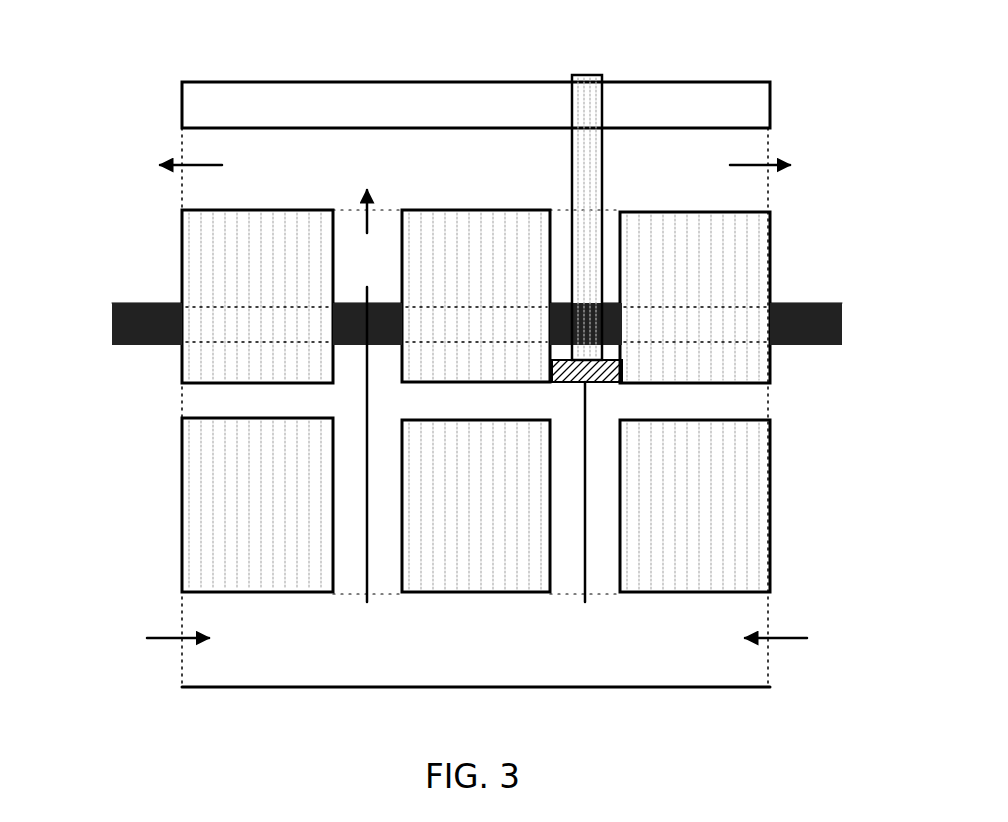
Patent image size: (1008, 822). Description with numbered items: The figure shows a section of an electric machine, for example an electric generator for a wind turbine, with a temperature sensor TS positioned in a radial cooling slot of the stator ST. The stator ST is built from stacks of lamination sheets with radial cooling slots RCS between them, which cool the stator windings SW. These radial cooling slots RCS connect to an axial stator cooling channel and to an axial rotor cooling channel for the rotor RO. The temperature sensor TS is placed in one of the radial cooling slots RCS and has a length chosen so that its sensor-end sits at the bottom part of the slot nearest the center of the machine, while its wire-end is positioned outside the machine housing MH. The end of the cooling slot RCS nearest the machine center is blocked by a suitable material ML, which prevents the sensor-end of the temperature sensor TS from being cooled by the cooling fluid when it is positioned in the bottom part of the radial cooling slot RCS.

The stator ST is at (158, 230).
The stator windings SW is at (813, 302).
The machine housing MH is at (725, 102).
The temperature sensor TS is at (582, 92).
The material ML is at (622, 382).
The radial cooling slots RCS is at (628, 197).
The rotor RO is at (535, 688).